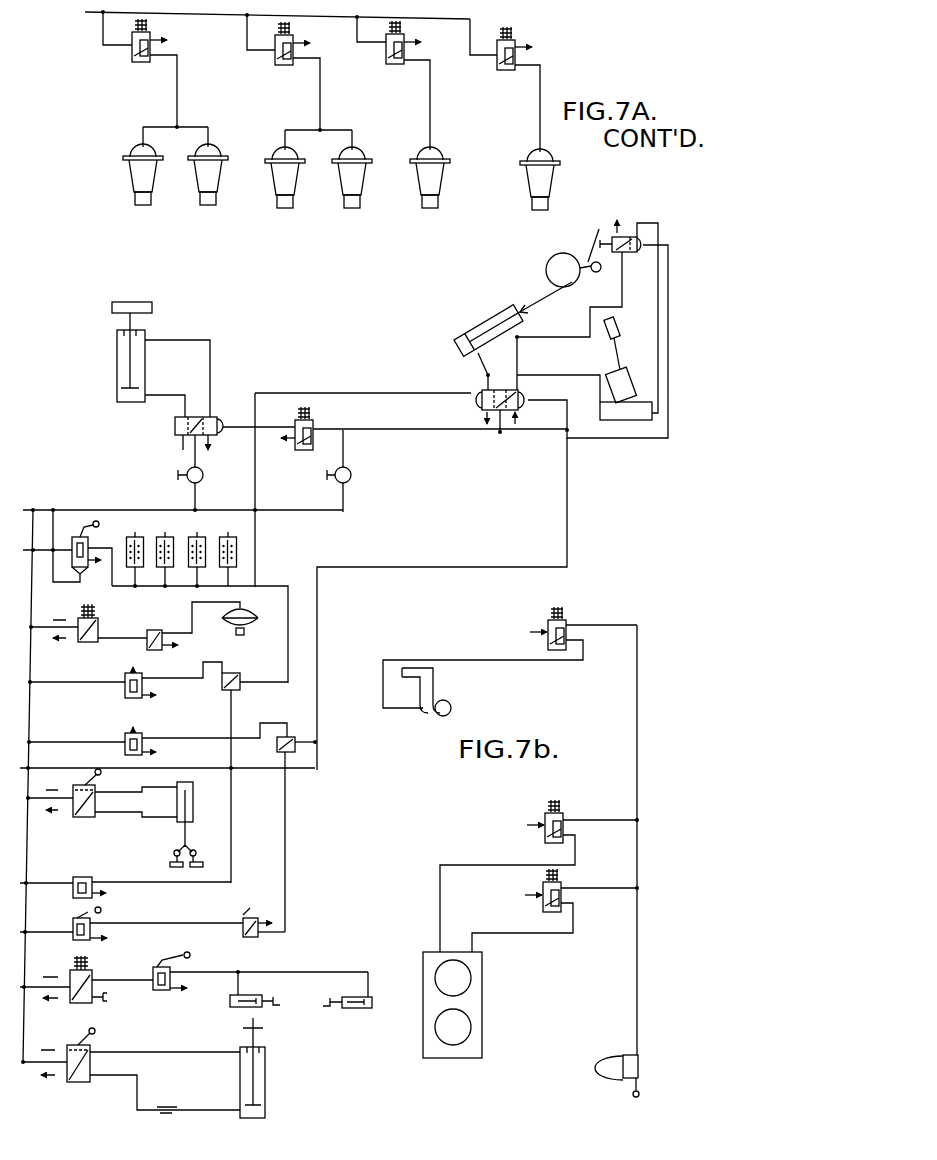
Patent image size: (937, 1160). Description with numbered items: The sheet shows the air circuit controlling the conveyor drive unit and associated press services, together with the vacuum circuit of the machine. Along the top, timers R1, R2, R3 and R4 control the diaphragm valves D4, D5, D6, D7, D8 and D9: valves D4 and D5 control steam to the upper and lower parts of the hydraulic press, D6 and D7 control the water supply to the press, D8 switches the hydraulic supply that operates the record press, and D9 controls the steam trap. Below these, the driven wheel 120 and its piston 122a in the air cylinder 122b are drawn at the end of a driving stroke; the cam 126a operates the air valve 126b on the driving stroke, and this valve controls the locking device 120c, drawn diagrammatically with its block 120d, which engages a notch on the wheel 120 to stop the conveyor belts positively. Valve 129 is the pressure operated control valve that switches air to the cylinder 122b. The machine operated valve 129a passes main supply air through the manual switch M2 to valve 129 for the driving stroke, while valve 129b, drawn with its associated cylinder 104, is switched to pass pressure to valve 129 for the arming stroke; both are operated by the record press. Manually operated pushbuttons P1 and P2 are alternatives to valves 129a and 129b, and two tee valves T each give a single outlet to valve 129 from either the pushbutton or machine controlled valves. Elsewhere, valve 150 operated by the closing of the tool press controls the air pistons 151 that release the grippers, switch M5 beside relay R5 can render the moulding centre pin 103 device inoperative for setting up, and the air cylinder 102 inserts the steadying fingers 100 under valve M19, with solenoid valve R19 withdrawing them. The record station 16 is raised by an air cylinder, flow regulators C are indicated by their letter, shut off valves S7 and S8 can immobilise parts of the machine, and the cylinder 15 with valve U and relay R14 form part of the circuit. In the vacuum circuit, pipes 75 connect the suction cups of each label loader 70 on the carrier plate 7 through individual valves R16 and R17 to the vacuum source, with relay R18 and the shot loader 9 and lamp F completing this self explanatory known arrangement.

In FIG. 7A, the timer R1 is at (135, 53).
In FIG. 7A, the timer R2 is at (278, 56).
In FIG. 7A, the timer R3 is at (389, 57).
In FIG. 7A, the timer R4 is at (501, 60).
In FIG. 7A, the diaphragm valve D4 is at (143, 191).
In FIG. 7A, the diaphragm valve D5 is at (208, 191).
In FIG. 7A, the diaphragm valve D6 is at (285, 194).
In FIG. 7A, the diaphragm valve D7 is at (352, 194).
In FIG. 7A, the diaphragm valve D8 is at (430, 195).
In FIG. 7A, the diaphragm valve D9 is at (540, 197).
In FIG. 7A, the platform 15 is at (153, 305).
In FIG. 7A, the valve U is at (202, 420).
In FIG. 7A, the shut off valve S7 is at (205, 472).
In FIG. 7A, the relay valve R14 is at (302, 440).
In FIG. 7A, the shut off valve S8 is at (357, 471).
In FIG. 7A, the control valve 129 is at (480, 388).
In FIG. 7A, the air cylinder 122b is at (492, 319).
In FIG. 7A, the piston 122a is at (537, 303).
In FIG. 7A, the driven wheel 120 is at (546, 270).
In FIG. 7A, the cam 126a is at (586, 237).
In FIG. 7A, the air valve 126b is at (630, 236).
In FIG. 7A, the locking device 120c is at (606, 333).
In FIG. 7A, the block 120d is at (618, 400).
In FIG. 7B, the valve 150 is at (72, 537).
In FIG. 7B, the air piston 151 is at (228, 532).
In FIG. 7B, the relay valve R5 is at (67, 638).
In FIG. 7B, the switch M5 is at (138, 625).
In FIG. 7B, the moulding centre pin 103 is at (255, 625).
In FIG. 7B, the manually operated pushbutton P1 is at (93, 690).
In FIG. 7B, the tee valve T is at (259, 712).
In FIG. 7B, the manually operated pushbutton P2 is at (92, 732).
In FIG. 7B, the machine operated valve 129b is at (125, 833).
In FIG. 7B, the cylinder 104 is at (161, 830).
In FIG. 7B, the machine operated valve 129a is at (131, 918).
In FIG. 7B, the manual switch M2 is at (242, 915).
In FIG. 7B, the solenoid valve R19 is at (63, 994).
In FIG. 7B, the control valve M19 is at (230, 991).
In FIG. 7B, the air cylinder 102 is at (250, 994).
In FIG. 7B, the steadying finger 100 is at (330, 1001).
In FIG. 7B, the record station 16 is at (196, 1065).
In FIG. 7B, the flow regulator C is at (165, 1094).
In FIG. 7B, the relay valve R18 is at (510, 652).
In FIG. 7B, the shot loader 9 is at (452, 706).
In FIG. 7B, the valve R16 is at (582, 816).
In FIG. 7B, the valve R17 is at (547, 890).
In FIG. 7B, the pipe 75 is at (507, 893).
In FIG. 7B, the label loader carrier 7 is at (482, 1030).
In FIG. 7B, the label loader 70 is at (452, 1027).
In FIG. 7B, the lamp F is at (603, 1062).